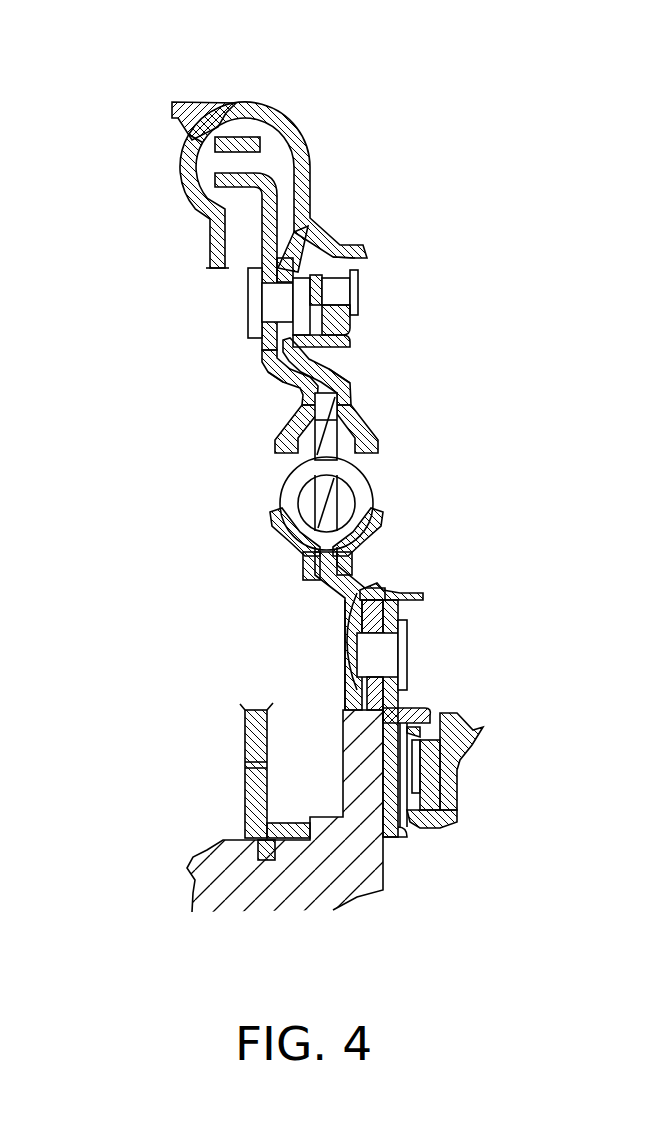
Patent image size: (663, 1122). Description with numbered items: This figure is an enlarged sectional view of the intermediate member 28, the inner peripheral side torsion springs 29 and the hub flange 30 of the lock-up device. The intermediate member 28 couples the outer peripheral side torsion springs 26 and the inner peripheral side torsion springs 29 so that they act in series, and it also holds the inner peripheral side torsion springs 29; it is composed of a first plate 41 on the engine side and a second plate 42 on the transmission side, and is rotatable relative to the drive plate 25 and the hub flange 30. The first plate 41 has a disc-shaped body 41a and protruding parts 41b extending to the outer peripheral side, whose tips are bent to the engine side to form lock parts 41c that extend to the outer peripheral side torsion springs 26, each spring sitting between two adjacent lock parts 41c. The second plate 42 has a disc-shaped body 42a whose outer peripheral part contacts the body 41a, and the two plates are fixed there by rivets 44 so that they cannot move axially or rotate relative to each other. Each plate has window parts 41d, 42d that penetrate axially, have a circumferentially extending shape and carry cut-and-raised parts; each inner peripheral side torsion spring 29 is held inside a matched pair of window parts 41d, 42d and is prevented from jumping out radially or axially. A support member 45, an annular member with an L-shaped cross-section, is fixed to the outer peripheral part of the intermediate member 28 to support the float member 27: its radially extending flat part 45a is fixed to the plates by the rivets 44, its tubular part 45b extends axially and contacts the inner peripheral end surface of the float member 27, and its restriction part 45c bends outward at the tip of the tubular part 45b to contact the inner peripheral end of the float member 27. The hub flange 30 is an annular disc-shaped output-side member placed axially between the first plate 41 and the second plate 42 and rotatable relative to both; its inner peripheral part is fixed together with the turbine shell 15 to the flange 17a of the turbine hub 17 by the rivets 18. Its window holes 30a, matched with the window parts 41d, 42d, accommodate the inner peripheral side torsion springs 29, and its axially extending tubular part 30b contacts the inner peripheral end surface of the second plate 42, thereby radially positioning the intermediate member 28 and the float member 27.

The turbine shell 15 is at (445, 680).
The turbine hub 17 is at (363, 810).
The flange 17a is at (232, 781).
The rivets 18 is at (431, 651).
The drive plate 25 is at (168, 261).
The outer peripheral side torsion springs 26 is at (278, 163).
The float member 27 is at (249, 73).
The intermediate member 28 is at (397, 365).
The inner peripheral side torsion springs 29 is at (259, 503).
The hub flange 30 is at (319, 604).
The window holes 30a is at (234, 546).
The tubular part 30b is at (259, 661).
The first plate 41 is at (258, 378).
The body 41a is at (222, 369).
The protruding parts 41b is at (300, 258).
The lock parts 41c is at (156, 162).
The window parts 41d is at (232, 433).
The second plate 42 is at (362, 395).
The body 42a is at (402, 337).
The window parts 42d is at (429, 433).
The rivets 44 is at (176, 303).
The support member 45 is at (371, 277).
The flat part 45a is at (383, 222).
The tubular part 45b is at (253, 400).
The restriction part 45c is at (407, 293).